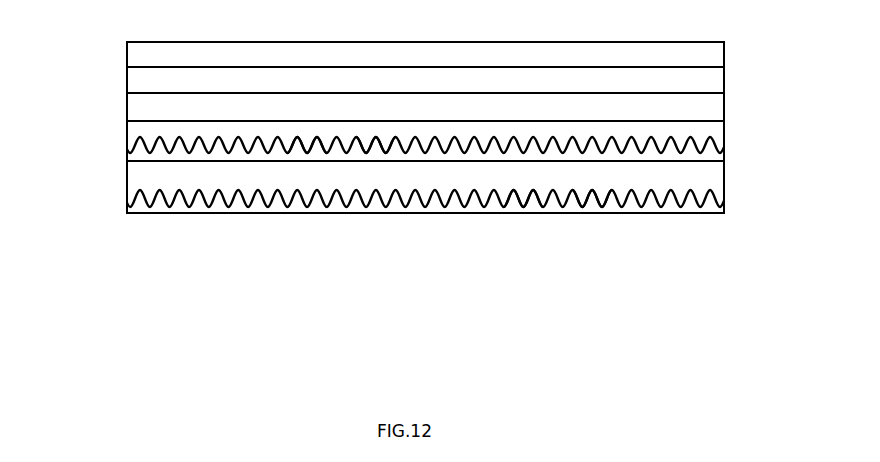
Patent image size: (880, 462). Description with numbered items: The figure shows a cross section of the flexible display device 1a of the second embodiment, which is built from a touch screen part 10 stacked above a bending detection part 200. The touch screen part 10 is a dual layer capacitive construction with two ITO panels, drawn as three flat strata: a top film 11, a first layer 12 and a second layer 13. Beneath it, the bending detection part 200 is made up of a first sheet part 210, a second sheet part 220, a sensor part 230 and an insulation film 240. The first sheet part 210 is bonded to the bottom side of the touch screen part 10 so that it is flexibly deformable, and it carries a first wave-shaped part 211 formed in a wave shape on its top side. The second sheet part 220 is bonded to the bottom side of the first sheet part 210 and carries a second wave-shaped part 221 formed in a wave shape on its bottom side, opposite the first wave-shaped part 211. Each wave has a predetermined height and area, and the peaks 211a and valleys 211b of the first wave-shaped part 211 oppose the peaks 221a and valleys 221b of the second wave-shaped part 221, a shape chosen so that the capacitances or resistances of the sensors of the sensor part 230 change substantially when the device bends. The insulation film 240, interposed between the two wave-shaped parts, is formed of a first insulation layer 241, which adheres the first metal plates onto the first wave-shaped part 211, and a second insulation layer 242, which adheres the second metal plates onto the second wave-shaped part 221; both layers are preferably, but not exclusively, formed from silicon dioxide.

The flexible display device 1a is at (423, 18).
The touch screen part 10 is at (480, 82).
The top film 11 is at (724, 47).
The first layer 12 is at (724, 77).
The second layer 13 is at (541, 109).
The bending detection part 200 is at (167, 320).
The first sheet part 210 is at (428, 230).
The first wave-shaped part 211 is at (695, 145).
The peaks of the first wave-shaped part 211a is at (365, 148).
The valleys of the first wave-shaped part 211b is at (295, 146).
The second sheet part 220 is at (218, 207).
The second wave-shaped part 221 is at (725, 200).
The peaks of the second wave-shaped part 221a is at (511, 210).
The valleys of the second wave-shaped part 221b is at (580, 210).
The sensor part 230 is at (425, 302).
The insulation film 240 is at (487, 286).
The first insulation layer 241 is at (724, 157).
The second insulation layer 242 is at (460, 249).